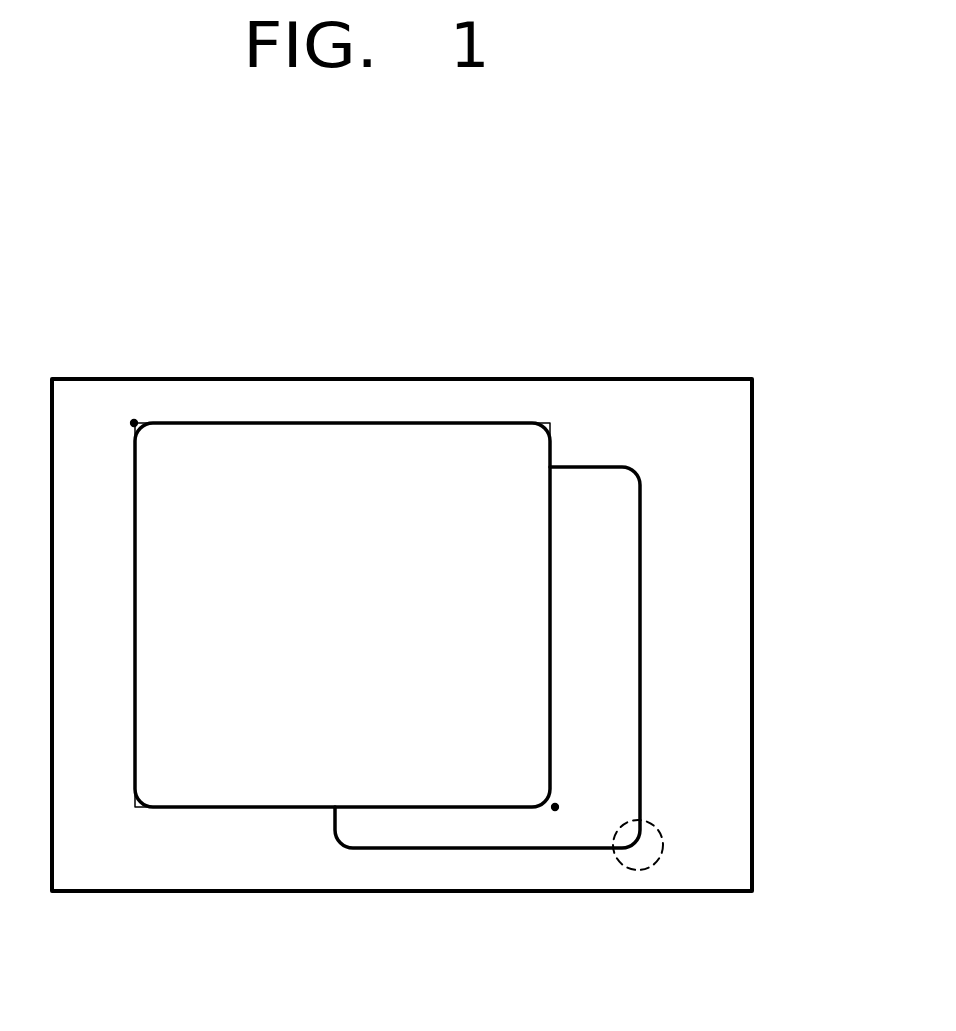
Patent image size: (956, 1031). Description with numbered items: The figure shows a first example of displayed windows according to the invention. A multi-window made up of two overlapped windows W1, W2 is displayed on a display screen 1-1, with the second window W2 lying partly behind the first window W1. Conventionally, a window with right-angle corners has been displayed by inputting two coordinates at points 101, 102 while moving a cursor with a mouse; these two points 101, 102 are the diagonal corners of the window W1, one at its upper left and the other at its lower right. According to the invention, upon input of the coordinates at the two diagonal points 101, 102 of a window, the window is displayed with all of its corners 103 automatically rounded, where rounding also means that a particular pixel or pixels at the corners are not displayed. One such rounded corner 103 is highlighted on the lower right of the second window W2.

The display screen 1-1 is at (752, 532).
The window W1 is at (438, 424).
The window W2 is at (613, 467).
The point 101 is at (134, 423).
The point 102 is at (556, 807).
The corners 103 is at (665, 843).